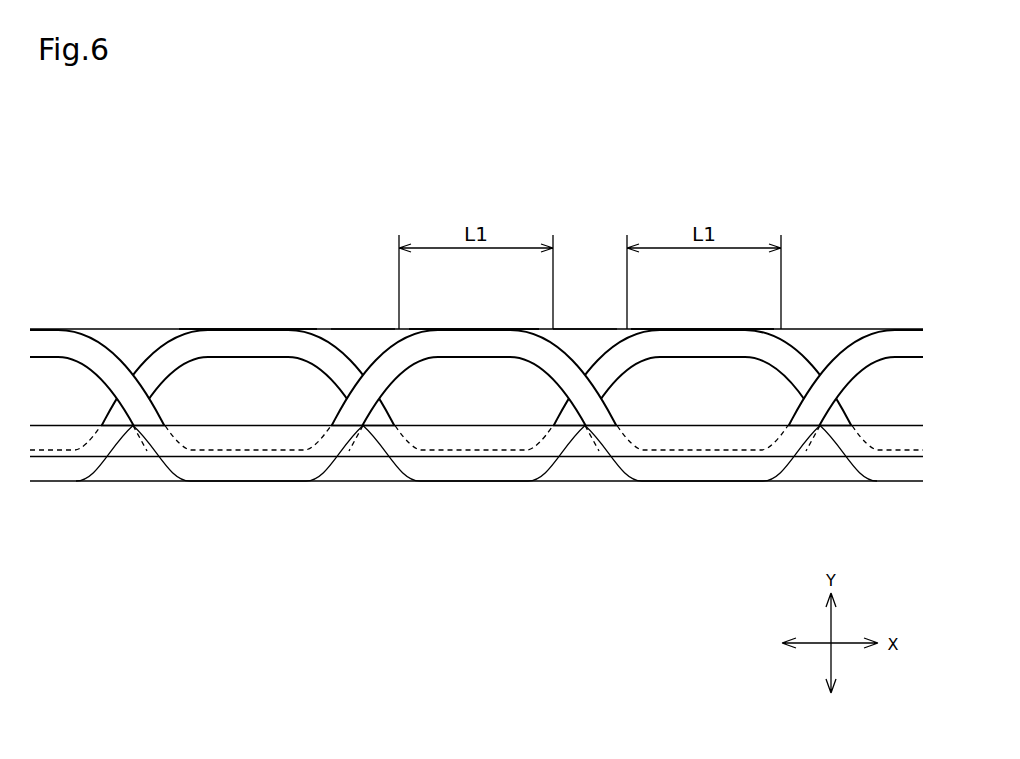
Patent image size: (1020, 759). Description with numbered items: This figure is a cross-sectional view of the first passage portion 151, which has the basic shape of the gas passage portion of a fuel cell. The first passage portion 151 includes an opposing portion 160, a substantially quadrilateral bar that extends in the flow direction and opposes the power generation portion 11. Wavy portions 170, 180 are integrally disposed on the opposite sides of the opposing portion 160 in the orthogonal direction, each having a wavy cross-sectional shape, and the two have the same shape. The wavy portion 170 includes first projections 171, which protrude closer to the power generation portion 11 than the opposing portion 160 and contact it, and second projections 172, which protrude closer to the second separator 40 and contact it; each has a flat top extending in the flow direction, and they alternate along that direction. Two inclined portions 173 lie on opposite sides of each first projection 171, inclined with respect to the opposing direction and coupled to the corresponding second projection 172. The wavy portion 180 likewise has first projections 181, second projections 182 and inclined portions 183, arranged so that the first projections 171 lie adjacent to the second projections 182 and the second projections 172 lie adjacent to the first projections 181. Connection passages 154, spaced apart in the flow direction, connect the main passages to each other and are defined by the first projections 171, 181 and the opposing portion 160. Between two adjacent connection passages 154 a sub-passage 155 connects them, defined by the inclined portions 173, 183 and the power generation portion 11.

The power generation portion 11 is at (824, 338).
The second separator 40 is at (811, 473).
The first passage portion 151 is at (476, 363).
The connection passage 154 is at (475, 375).
The sub-passage 155 is at (362, 348).
The opposing portion 160 is at (133, 462).
The wavy portion 170 is at (110, 334).
The first projection 171 is at (505, 331).
The second projection 172 is at (243, 472).
The inclined portion 173 is at (107, 378).
The wavy portion 180 is at (158, 333).
The first projection 181 is at (277, 331).
The second projection 182 is at (473, 472).
The inclined portion 183 is at (162, 378).